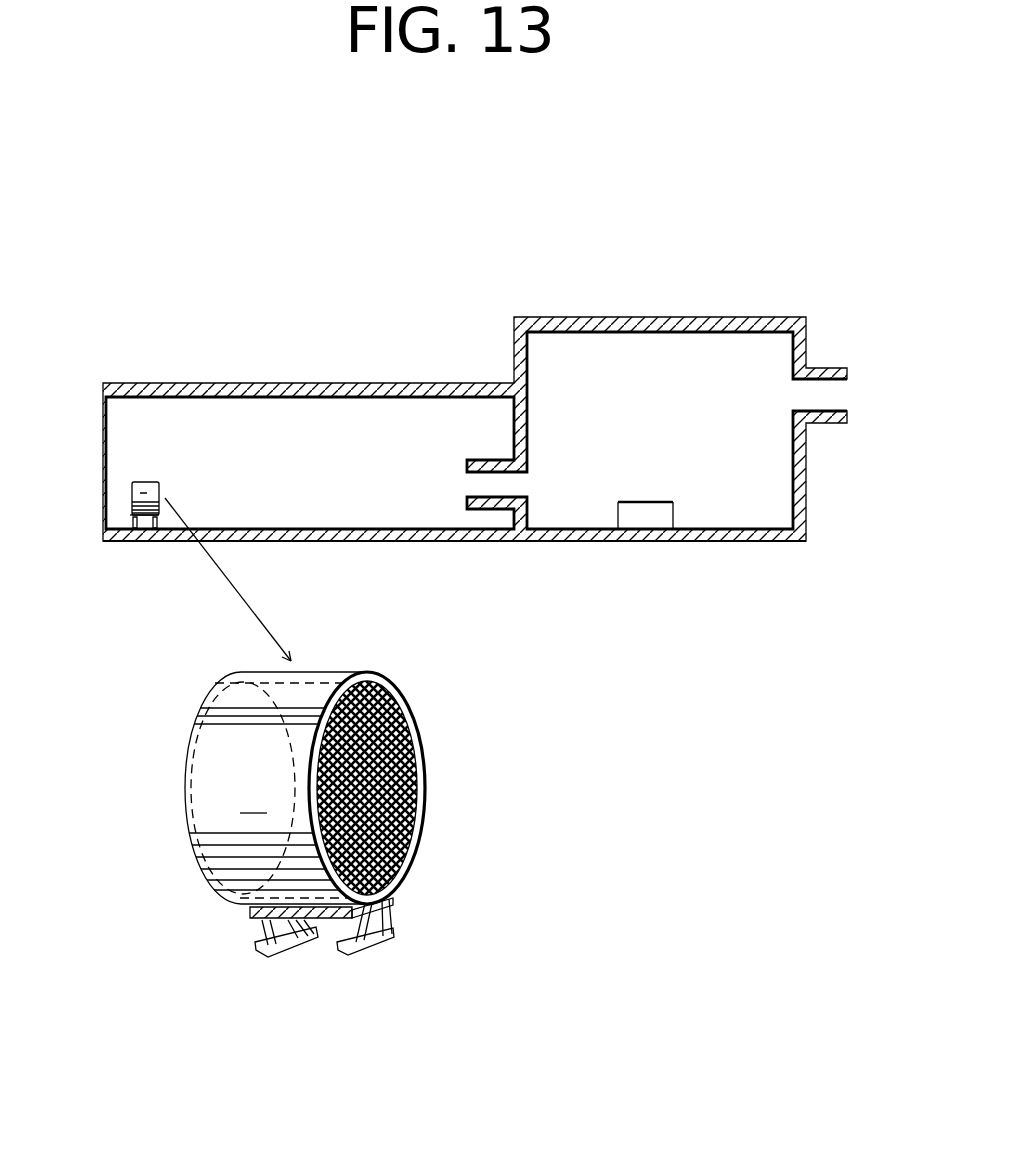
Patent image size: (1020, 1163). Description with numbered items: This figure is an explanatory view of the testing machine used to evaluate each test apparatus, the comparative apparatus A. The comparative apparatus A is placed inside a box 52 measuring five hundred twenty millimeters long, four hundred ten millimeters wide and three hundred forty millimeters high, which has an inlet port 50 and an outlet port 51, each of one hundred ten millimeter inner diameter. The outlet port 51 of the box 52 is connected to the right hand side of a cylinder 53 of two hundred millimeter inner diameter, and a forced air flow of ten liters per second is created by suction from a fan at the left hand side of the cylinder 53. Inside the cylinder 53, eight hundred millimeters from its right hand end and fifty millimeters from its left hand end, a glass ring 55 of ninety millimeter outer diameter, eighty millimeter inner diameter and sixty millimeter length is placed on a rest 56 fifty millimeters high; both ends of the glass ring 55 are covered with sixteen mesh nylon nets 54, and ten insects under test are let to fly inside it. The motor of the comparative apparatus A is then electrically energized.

The inlet port 50 is at (832, 368).
The outlet port 51 is at (493, 462).
The box 52 is at (673, 322).
The cylinder 53 is at (368, 384).
The nylon nets 54 is at (398, 745).
The glass ring 55 is at (149, 488).
The rest 56 is at (132, 524).
The comparative apparatus A is at (642, 497).